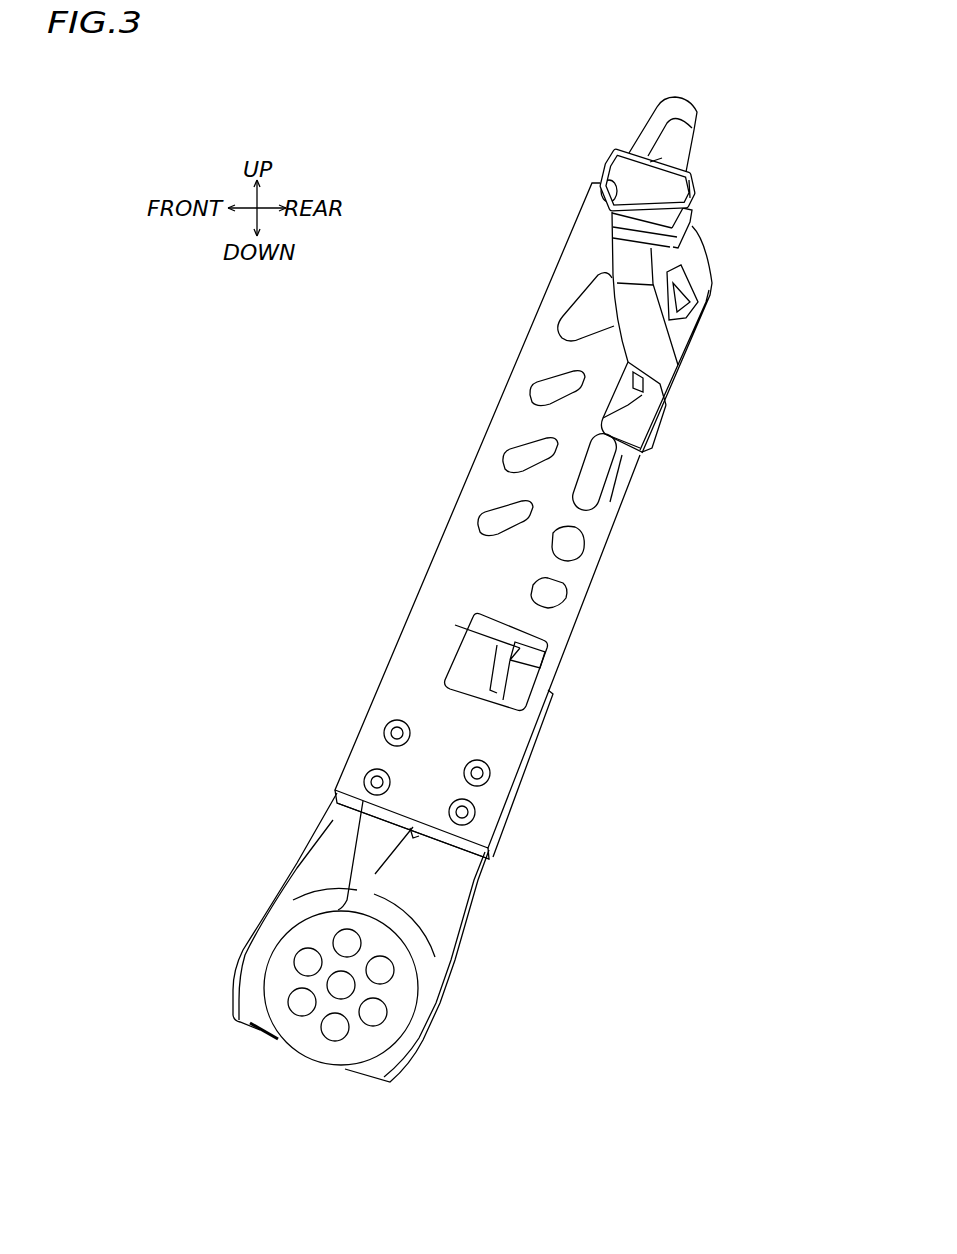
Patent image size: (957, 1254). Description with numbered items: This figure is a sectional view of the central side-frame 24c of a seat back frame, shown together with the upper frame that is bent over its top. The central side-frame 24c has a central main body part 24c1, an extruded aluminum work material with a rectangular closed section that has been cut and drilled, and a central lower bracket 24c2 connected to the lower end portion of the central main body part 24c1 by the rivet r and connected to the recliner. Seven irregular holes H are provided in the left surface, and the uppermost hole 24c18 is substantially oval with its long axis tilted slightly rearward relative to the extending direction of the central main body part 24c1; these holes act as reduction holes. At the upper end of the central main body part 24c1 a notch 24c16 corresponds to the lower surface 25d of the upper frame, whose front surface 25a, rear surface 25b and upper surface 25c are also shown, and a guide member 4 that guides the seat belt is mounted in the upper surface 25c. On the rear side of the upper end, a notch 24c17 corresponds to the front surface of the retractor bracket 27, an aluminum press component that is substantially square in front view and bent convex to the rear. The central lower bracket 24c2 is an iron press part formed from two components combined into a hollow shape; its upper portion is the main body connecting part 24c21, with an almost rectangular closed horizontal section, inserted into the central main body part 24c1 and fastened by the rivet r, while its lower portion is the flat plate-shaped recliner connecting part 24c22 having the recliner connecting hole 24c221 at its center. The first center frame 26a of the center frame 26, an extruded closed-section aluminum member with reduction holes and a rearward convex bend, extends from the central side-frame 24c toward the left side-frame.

The guide member 4 is at (673, 96).
The front surface 25a is at (606, 156).
The rear surface 25b is at (696, 190).
The upper surface 25c is at (658, 160).
The lower surface 25d is at (680, 232).
The notch 24c16 is at (604, 182).
The hole 24c18 is at (565, 306).
The irregular holes H is at (536, 388).
The retractor bracket 27 is at (677, 348).
The notch 24c17 is at (632, 470).
The central main body part 24c1 is at (617, 533).
The central side-frame 24c is at (437, 620).
The first center frame 26a is at (538, 680).
The center frame 26 is at (553, 661).
The rivet r is at (395, 733).
The main body connecting part 24c21 is at (475, 860).
The central lower bracket 24c2 is at (465, 925).
The recliner connecting part 24c22 is at (338, 988).
The recliner connecting hole 24c221 is at (300, 1000).